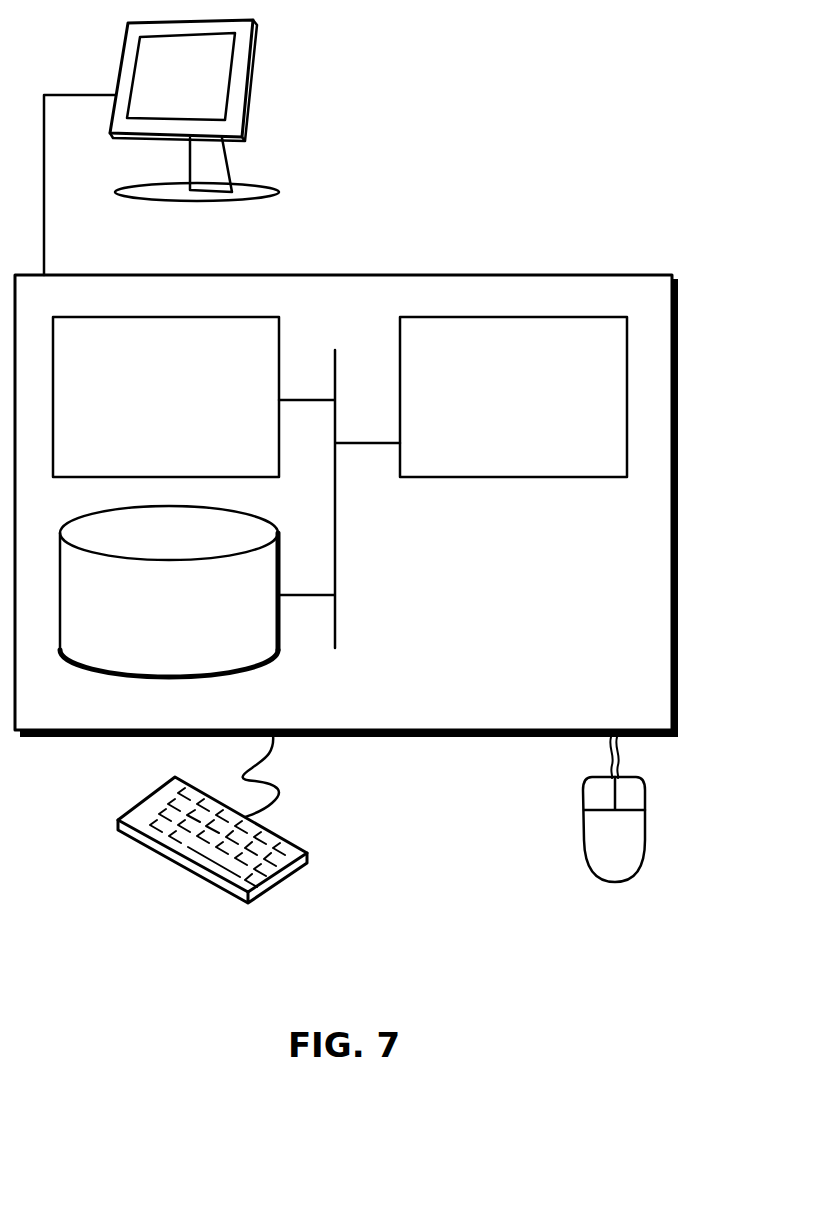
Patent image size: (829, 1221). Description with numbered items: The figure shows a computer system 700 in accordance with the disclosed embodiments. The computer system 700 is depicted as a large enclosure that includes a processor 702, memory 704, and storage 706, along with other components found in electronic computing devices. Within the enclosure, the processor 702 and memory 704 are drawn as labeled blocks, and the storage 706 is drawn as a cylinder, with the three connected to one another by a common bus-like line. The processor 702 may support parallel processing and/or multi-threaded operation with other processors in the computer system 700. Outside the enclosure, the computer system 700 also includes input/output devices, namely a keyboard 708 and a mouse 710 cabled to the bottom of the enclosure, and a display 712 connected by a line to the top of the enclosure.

The computer system 700 is at (390, 253).
The processor 702 is at (496, 410).
The memory 704 is at (146, 409).
The storage 706 is at (152, 621).
The keyboard 708 is at (137, 842).
The mouse 710 is at (594, 850).
The display 712 is at (161, 147).